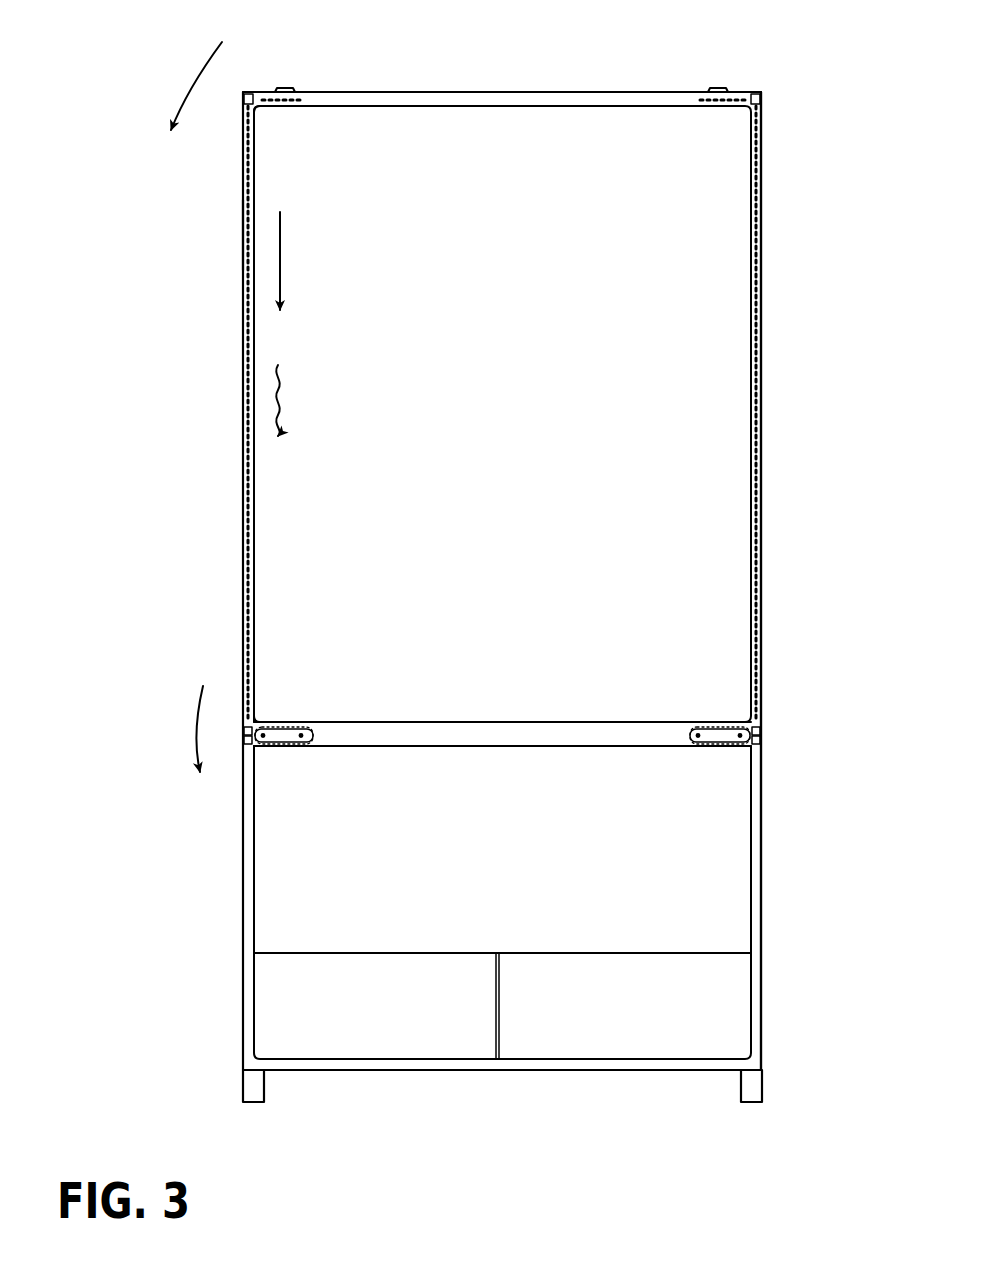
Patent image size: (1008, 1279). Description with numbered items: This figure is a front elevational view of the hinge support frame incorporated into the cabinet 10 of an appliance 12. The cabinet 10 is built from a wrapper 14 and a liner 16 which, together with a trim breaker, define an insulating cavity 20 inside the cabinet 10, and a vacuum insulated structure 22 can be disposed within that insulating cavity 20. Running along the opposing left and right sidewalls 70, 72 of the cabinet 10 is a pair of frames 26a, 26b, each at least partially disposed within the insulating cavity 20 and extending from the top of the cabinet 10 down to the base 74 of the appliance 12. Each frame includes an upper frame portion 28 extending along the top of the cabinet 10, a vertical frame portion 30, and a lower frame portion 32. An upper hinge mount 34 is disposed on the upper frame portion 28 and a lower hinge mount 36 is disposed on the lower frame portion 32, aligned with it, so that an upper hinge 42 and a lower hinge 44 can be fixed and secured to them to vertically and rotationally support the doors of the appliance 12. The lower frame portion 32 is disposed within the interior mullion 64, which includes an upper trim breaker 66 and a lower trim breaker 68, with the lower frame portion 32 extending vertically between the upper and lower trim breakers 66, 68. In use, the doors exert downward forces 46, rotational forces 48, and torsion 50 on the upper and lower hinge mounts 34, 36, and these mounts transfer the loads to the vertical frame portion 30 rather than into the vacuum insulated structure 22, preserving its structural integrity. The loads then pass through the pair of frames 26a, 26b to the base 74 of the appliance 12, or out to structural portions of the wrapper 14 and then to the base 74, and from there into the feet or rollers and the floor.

The cabinet 10 is at (632, 87).
The appliance 12 is at (775, 73).
The wrapper 14 is at (762, 107).
The liner 16 is at (468, 105).
The insulating cavity 20 is at (762, 247).
The vacuum insulated structure 22 is at (760, 706).
The frame 26a is at (243, 318).
The frame 26b is at (762, 306).
The upper frame portion 28 is at (266, 116).
The vertical frame portion 30 is at (240, 233).
The lower frame portion 32 is at (252, 755).
The upper hinge mount 34 is at (290, 90).
The lower hinge mount 36 is at (268, 755).
The upper hinge 42 is at (258, 92).
The lower hinge 44 is at (273, 735).
The downward forces 46 is at (280, 265).
The rotational forces 48 is at (190, 72).
The torsion 50 is at (283, 400).
The interior mullion 64 is at (622, 735).
The upper trim breaker 66 is at (313, 722).
The lower trim breaker 68 is at (297, 750).
The left sidewall 70 is at (253, 455).
The right sidewall 72 is at (762, 402).
The base 74 is at (755, 1082).